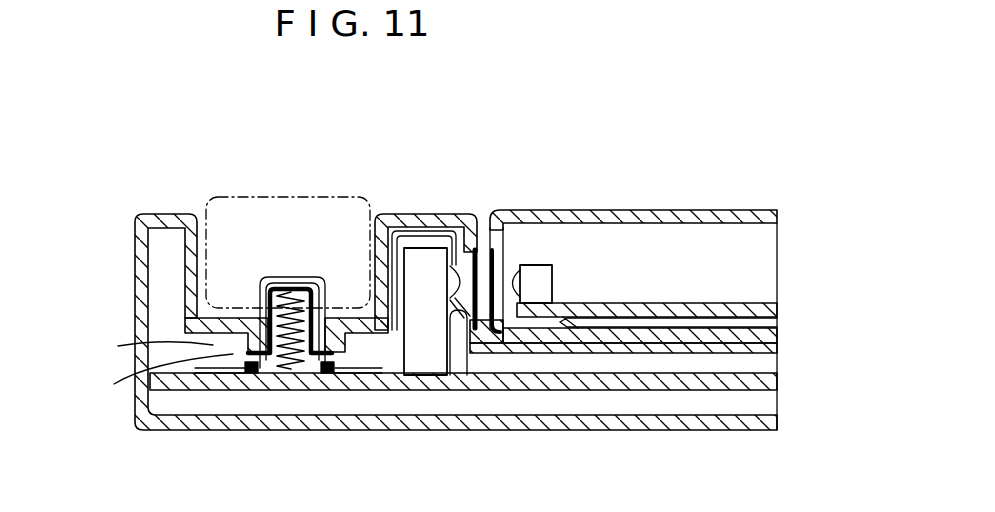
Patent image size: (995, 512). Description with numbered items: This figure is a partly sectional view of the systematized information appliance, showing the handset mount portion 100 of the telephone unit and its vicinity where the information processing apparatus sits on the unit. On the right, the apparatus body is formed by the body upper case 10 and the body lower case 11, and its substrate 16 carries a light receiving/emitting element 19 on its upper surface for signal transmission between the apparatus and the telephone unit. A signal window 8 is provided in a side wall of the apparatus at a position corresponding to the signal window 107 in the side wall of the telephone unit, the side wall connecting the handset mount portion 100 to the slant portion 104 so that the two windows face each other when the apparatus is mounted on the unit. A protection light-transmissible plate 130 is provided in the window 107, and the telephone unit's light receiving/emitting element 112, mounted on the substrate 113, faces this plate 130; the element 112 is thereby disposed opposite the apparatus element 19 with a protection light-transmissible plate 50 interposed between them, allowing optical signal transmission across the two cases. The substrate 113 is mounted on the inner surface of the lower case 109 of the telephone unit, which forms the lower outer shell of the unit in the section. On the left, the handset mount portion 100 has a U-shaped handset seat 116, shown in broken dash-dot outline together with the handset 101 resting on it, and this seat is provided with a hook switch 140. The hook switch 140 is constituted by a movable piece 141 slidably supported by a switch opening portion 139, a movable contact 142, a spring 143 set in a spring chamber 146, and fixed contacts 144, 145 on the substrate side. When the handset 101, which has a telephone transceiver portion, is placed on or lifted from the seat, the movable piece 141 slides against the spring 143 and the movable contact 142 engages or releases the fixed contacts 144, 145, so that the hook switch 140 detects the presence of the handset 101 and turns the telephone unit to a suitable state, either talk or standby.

The signal window 8 is at (508, 263).
The body upper case 10 is at (686, 209).
The body lower case 11 is at (778, 320).
The substrate 16 is at (622, 302).
The light receiving/emitting element 19 is at (528, 265).
The protection light-transmissible plate 50 is at (513, 323).
The handset mount portion 100 is at (383, 213).
The handset 101 is at (345, 196).
The slant portion 104 is at (778, 349).
The signal window 107 is at (455, 264).
The lower case 109 is at (155, 431).
The light receiving/emitting element 112 is at (425, 247).
The substrate 113 is at (380, 391).
The U-shaped handset seat 116 is at (356, 316).
The protection light-transmissible plate 130 is at (450, 320).
The switch opening portion 139 is at (218, 316).
The hook switch 140 is at (408, 437).
The movable piece 141 is at (258, 280).
The movable contact 142 is at (147, 383).
The spring 143 is at (275, 373).
The fixed contact 144 is at (241, 373).
The fixed contact 145 is at (305, 371).
The spring chamber 146 is at (303, 287).